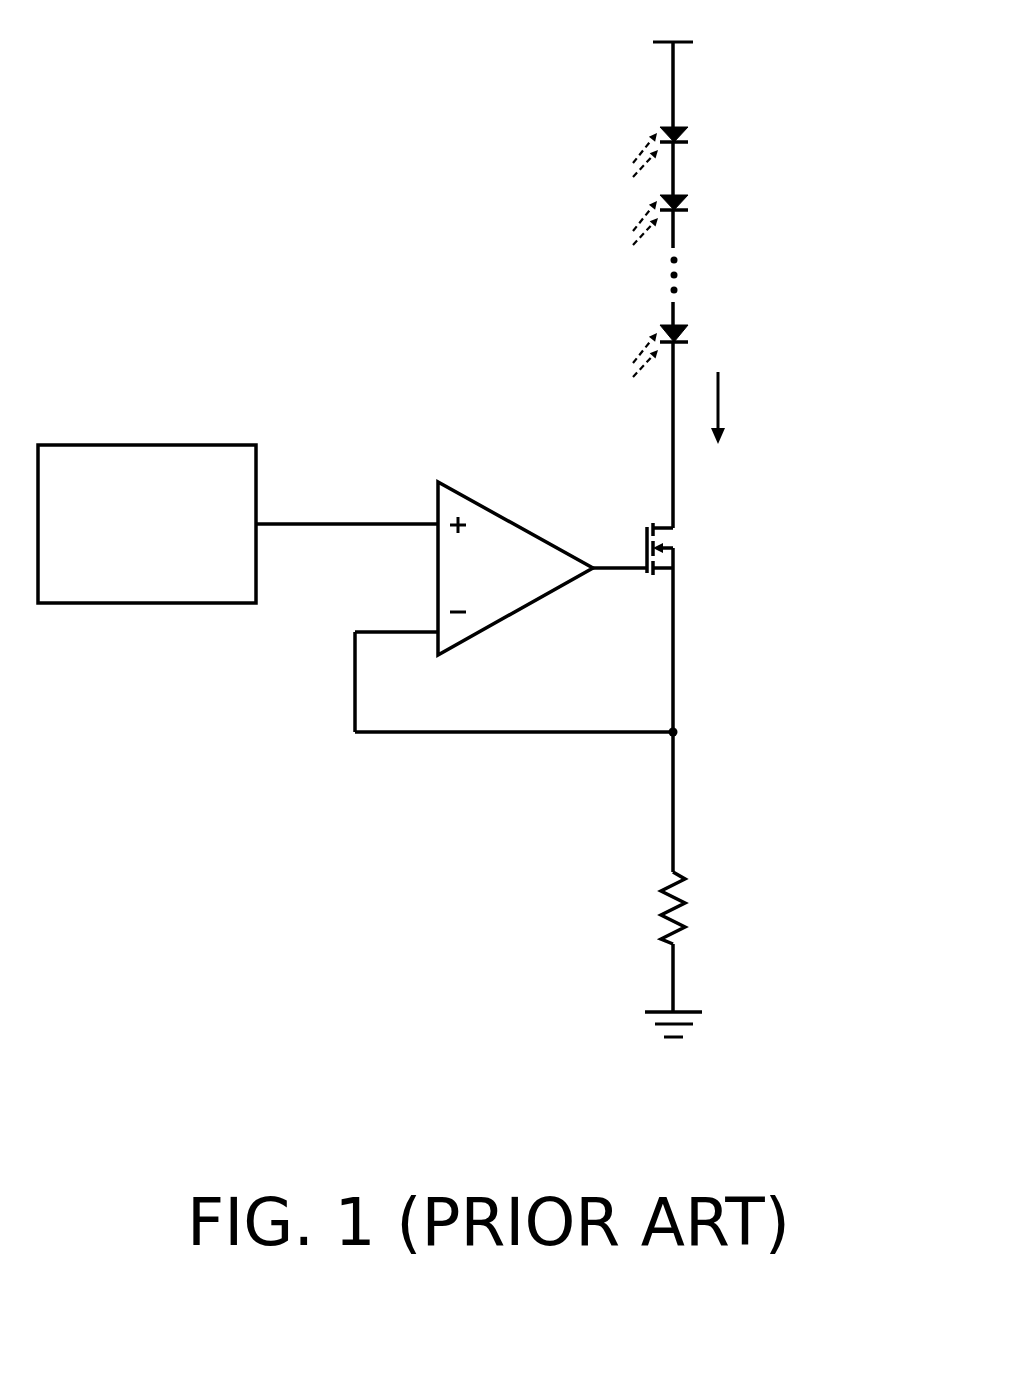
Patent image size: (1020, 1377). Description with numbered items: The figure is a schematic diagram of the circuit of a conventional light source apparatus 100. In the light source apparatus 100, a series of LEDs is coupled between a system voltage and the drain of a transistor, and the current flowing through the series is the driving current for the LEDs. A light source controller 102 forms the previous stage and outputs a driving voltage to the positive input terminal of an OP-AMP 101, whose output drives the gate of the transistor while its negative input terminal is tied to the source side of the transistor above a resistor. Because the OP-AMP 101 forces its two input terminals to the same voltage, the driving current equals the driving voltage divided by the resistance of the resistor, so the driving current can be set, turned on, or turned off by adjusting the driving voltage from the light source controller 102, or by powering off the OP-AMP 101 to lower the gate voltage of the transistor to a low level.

The light source apparatus 100 is at (845, 1097).
The OP-AMP 101 is at (530, 527).
The light source controller 102 is at (185, 603).